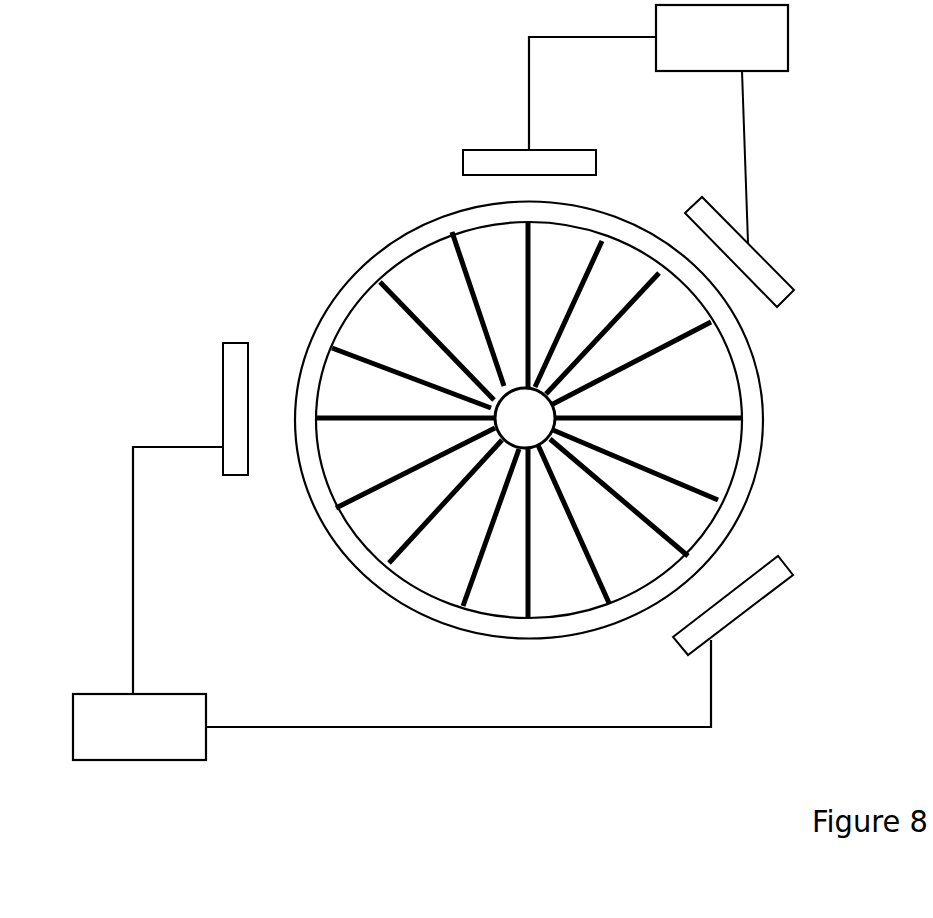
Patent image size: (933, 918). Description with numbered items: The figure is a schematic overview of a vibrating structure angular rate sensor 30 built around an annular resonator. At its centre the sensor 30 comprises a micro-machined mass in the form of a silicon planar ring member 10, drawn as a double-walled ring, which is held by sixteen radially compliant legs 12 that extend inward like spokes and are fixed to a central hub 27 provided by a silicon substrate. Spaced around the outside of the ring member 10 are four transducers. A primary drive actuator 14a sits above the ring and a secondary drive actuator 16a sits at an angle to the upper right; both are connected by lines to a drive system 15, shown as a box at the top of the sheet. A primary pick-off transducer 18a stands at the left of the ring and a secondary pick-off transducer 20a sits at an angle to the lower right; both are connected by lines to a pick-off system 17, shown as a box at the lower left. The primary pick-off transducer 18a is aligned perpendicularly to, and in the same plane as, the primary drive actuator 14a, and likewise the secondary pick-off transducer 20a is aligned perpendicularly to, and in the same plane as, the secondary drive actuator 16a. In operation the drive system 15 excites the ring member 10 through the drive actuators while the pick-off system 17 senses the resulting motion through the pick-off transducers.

The vibrating structure angular rate sensor 30 is at (180, 190).
The silicon planar ring member 10 is at (392, 252).
The radially compliant legs 12 is at (633, 364).
The central hub 27 is at (545, 435).
The primary drive actuator 14a is at (492, 149).
The drive system 15 is at (722, 38).
The secondary drive actuator 16a is at (779, 273).
The primary pick-off transducer 18a is at (223, 392).
The secondary pick-off transducer 20a is at (757, 603).
The pick-off system 17 is at (139, 727).